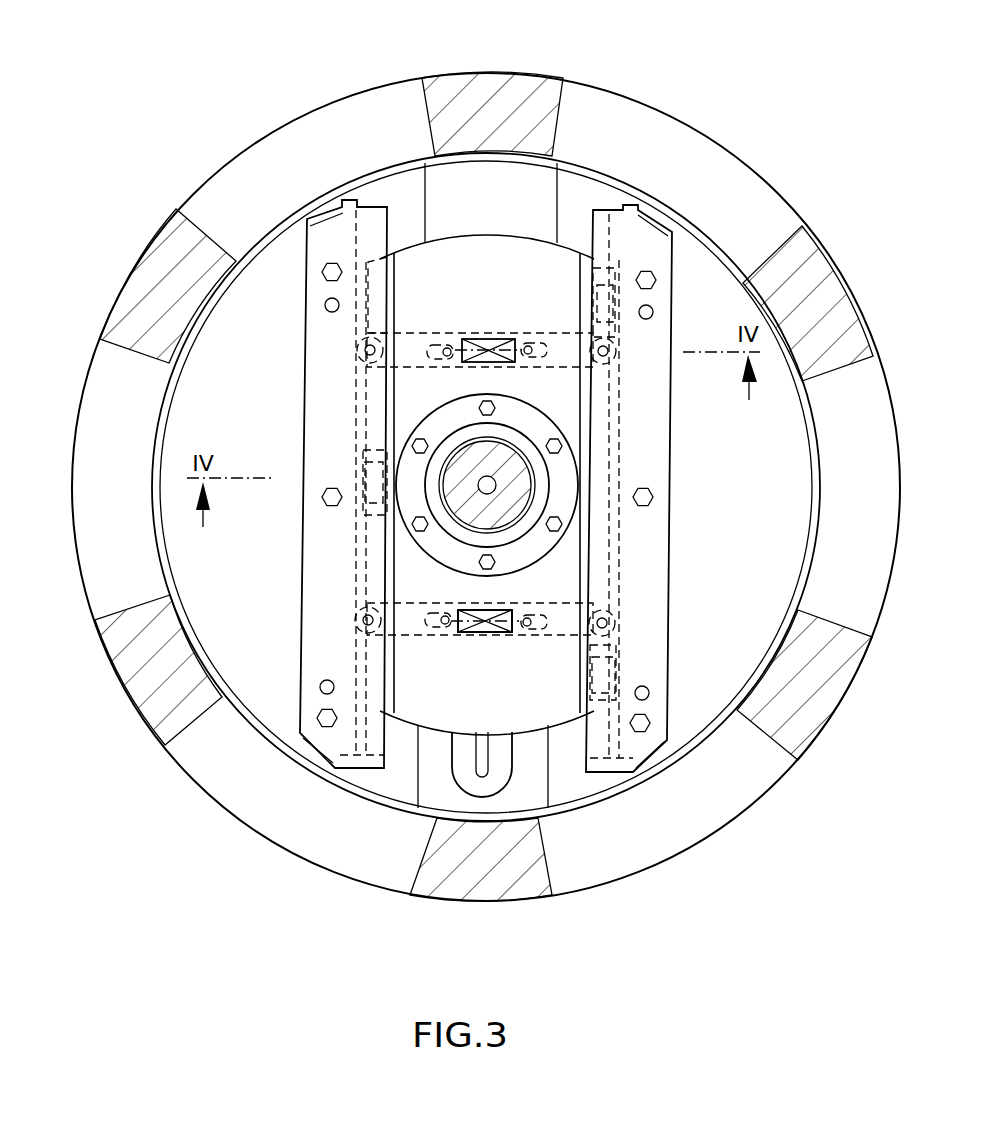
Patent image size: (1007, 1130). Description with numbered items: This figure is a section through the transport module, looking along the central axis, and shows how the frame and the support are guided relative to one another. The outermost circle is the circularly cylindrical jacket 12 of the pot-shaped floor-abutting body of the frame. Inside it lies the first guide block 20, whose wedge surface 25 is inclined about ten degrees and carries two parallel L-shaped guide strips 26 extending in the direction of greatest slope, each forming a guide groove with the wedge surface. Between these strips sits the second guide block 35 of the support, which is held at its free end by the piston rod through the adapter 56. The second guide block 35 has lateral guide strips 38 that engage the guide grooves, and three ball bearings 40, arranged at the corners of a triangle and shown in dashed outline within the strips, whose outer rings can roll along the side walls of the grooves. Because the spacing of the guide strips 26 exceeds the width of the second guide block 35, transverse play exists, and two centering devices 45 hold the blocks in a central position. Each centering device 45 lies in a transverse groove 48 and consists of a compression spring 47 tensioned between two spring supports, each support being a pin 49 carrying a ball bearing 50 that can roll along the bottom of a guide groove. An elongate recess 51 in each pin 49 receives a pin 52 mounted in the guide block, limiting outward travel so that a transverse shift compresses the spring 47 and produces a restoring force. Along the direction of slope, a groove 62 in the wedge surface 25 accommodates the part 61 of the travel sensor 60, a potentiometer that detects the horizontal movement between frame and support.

The jacket 12 is at (684, 152).
The guide block 20 is at (743, 283).
The wedge surface 25 is at (762, 409).
The guide strips 26 is at (323, 615).
The second guide block 35 is at (578, 735).
The guide strips 38 is at (394, 713).
The ball bearings 40 is at (612, 298).
The centering devices 45 is at (502, 325).
The compression spring 47 is at (481, 635).
The transverse groove 48 is at (557, 636).
The pin 49 is at (576, 606).
The ball bearing 50 is at (607, 627).
The elongate recess 51 is at (436, 627).
The pin 52 is at (446, 628).
The adapter 56 is at (513, 484).
The travel sensor 60 is at (452, 790).
The part of the travel sensor 61 is at (485, 788).
The groove 62 is at (492, 190).